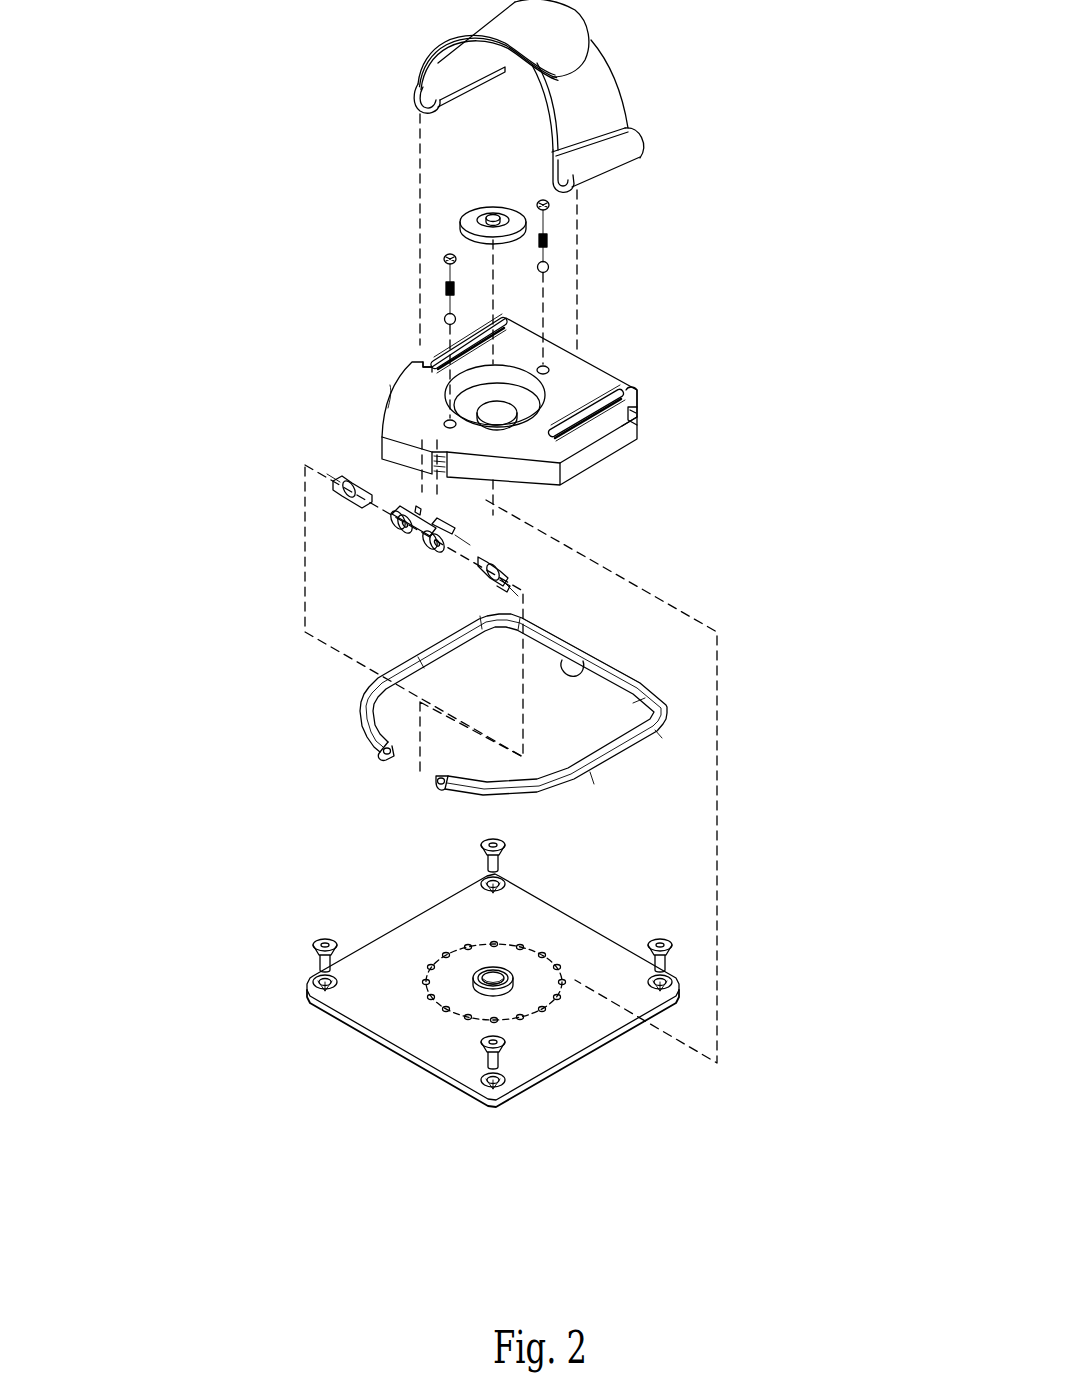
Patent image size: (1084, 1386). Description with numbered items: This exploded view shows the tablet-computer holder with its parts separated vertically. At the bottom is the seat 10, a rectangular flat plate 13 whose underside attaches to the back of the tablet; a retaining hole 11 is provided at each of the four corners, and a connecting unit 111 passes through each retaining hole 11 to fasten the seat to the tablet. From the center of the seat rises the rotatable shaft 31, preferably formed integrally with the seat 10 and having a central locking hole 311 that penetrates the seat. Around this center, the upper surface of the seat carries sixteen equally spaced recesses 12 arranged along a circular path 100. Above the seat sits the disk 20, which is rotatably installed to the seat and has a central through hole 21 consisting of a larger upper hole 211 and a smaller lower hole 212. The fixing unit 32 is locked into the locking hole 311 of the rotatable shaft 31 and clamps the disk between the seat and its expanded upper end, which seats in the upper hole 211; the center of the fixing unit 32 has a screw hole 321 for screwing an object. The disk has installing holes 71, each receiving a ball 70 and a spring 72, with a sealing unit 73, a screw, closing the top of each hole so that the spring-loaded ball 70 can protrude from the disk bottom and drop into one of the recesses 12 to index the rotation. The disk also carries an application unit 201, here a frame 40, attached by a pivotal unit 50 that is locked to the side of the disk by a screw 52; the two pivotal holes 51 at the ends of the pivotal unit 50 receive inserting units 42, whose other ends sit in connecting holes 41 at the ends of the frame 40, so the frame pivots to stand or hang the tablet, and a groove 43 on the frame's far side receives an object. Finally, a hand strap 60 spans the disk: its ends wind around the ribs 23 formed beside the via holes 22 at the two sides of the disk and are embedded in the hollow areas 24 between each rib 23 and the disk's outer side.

The seat 10 is at (474, 984).
The retaining hole 11 is at (483, 881).
The recess 12 is at (461, 1041).
The flat plate 13 is at (604, 1059).
The circular path 100 is at (458, 1022).
The connecting unit 111 is at (484, 846).
The disk 20 is at (518, 403).
The through hole 21 is at (556, 388).
The via hole 22 is at (437, 354).
The rib 23 is at (440, 352).
The hollow area 24 is at (418, 343).
The application unit 201 is at (655, 668).
The upper hole 211 is at (627, 428).
The lower hole 212 is at (508, 416).
The rotatable shaft 31 is at (468, 925).
The locking hole 311 is at (507, 974).
The fixing unit 32 is at (438, 187).
The screw hole 321 is at (490, 216).
The frame 40 is at (474, 725).
The connecting hole 41 is at (385, 760).
The inserting unit 42 is at (352, 484).
The groove 43 is at (581, 662).
The pivotal unit 50 is at (433, 559).
The pivotal hole 51 is at (436, 543).
The screw 52 is at (443, 512).
The hand strap 60 is at (610, 95).
The ball 70 is at (446, 318).
The installing hole 71 is at (446, 423).
The spring 72 is at (446, 286).
The sealing unit 73 is at (446, 256).